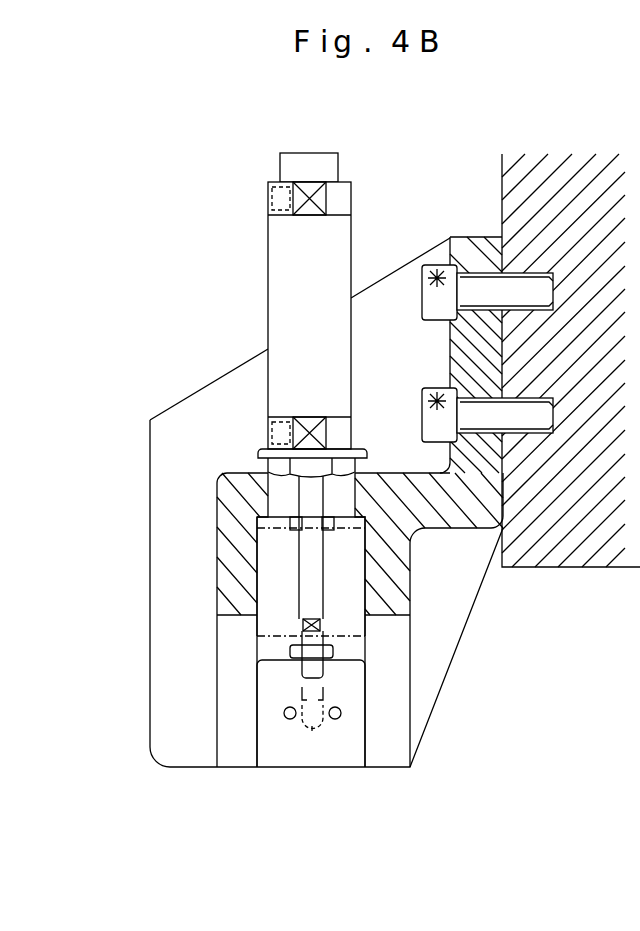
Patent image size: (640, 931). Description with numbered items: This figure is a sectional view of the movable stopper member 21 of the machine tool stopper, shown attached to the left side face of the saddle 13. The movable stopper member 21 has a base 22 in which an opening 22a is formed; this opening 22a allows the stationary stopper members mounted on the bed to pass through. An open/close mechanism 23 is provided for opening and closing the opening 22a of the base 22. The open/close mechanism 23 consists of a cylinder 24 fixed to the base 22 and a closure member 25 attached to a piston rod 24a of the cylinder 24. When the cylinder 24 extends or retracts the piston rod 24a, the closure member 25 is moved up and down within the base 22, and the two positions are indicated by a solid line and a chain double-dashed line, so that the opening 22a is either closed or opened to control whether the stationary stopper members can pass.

The saddle 13 is at (556, 553).
The movable stopper member 21 is at (431, 187).
The base 22 is at (141, 540).
The opening 22a is at (237, 722).
The open/close mechanism 23 is at (258, 193).
The cylinder 24 is at (285, 298).
The piston rod 24a is at (318, 563).
The closure member 25 is at (275, 624).